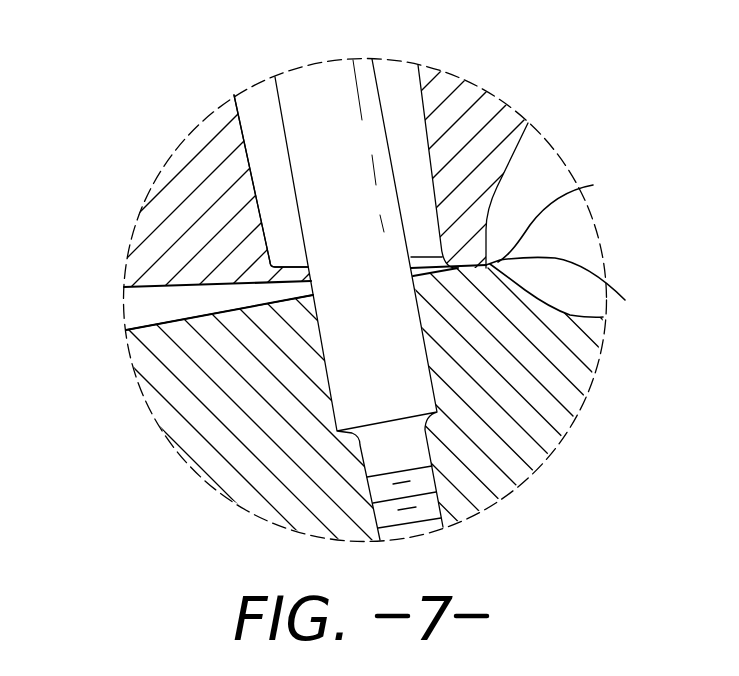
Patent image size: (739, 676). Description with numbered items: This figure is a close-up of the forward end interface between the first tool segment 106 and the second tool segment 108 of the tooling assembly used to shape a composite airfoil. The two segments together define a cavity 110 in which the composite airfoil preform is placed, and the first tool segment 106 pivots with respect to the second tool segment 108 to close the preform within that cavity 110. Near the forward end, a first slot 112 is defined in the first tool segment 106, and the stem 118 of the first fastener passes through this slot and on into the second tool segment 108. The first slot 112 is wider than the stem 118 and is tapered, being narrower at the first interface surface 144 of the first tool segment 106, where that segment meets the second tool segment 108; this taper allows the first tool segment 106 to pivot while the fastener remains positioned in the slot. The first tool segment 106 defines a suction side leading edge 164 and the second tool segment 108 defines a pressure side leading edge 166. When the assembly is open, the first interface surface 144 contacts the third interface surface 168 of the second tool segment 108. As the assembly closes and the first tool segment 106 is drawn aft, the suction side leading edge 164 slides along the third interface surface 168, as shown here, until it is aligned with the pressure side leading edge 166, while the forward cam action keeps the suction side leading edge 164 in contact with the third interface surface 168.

The first tool segment 106 is at (183, 190).
The second tool segment 108 is at (213, 437).
The cavity 110 is at (535, 175).
The first slot 112 is at (397, 92).
The stem 118 is at (300, 87).
The first interface surface 144 is at (137, 294).
The suction side leading edge 164 is at (593, 185).
The pressure side leading edge 166 is at (625, 300).
The third interface surface 168 is at (147, 322).